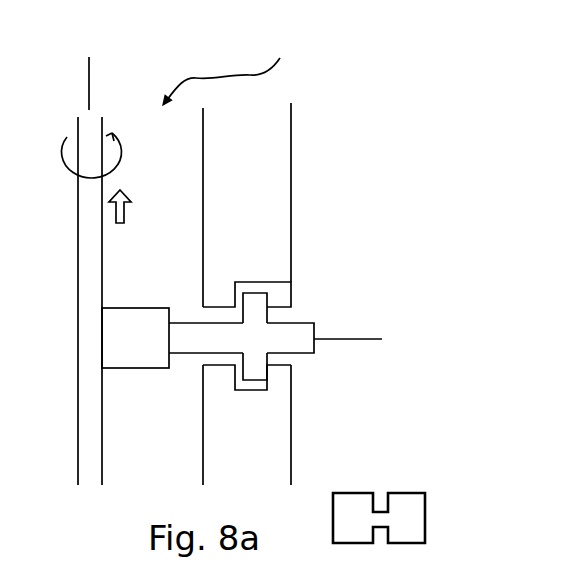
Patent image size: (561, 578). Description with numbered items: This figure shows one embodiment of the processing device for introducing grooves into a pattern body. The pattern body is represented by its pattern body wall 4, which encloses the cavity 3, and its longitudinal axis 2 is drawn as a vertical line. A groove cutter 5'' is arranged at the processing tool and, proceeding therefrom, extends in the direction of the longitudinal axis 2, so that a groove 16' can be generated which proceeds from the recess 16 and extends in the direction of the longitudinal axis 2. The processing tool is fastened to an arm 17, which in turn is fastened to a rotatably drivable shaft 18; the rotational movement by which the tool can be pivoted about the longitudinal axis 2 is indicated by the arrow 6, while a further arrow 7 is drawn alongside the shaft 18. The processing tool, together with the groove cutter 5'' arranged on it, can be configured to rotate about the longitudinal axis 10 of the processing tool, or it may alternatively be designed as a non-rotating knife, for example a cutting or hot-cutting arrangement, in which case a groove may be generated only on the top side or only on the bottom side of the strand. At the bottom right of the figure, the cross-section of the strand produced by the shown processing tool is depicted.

The longitudinal axis 2 is at (90, 92).
The cavity 3 is at (226, 65).
The pattern body wall 4 is at (273, 165).
The groove cutter 5'' is at (301, 304).
The arrow 6 is at (62, 148).
The direction of displacement 7 is at (125, 214).
The longitudinal axis of the processing tool 10 is at (345, 340).
The recess 16 is at (303, 393).
The groove 16' is at (280, 242).
The arm 17 is at (133, 315).
The shaft 18 is at (92, 290).